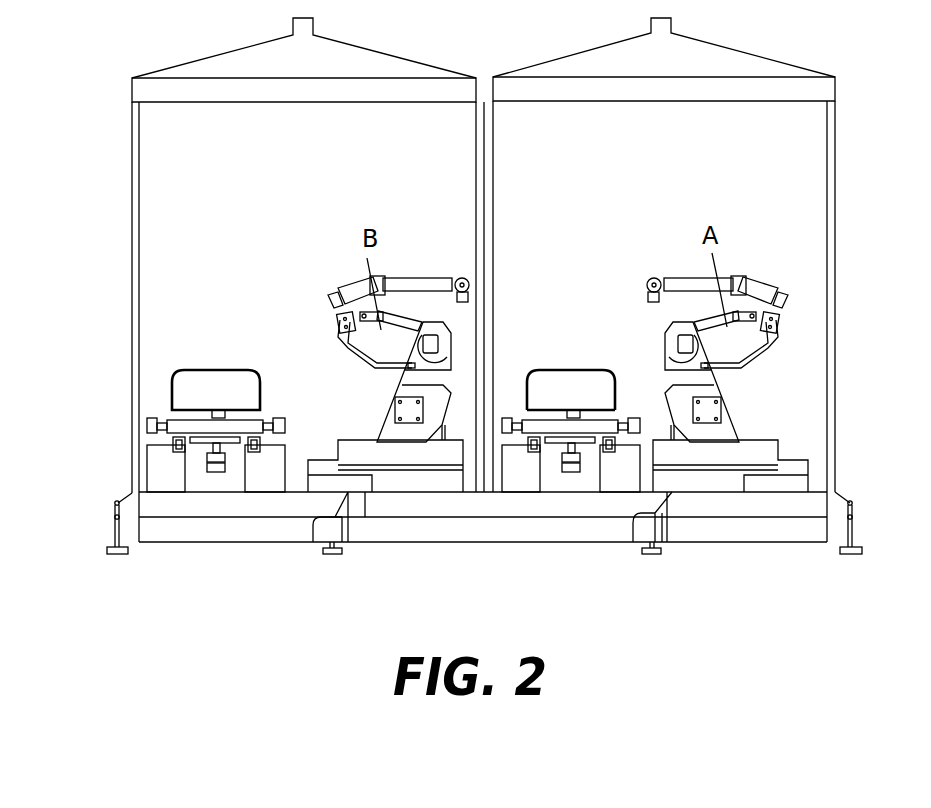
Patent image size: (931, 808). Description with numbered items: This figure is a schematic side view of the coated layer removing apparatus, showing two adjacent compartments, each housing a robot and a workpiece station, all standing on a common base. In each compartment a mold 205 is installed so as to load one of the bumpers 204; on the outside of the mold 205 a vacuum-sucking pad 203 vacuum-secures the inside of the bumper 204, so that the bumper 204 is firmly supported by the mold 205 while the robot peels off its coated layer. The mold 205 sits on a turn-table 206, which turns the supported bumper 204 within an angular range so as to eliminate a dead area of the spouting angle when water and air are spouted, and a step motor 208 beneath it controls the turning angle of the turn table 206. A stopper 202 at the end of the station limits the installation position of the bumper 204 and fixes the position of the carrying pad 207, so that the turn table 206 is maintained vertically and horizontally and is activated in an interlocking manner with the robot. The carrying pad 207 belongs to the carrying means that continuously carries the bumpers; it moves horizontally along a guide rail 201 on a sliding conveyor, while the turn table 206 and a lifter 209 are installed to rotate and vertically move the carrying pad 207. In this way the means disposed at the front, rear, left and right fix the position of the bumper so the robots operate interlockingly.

The guide rail 201 is at (623, 450).
The stopper 202 is at (625, 418).
The vacuum-sucking pad 203 is at (590, 370).
The bumper 204 is at (533, 372).
The mold 205 is at (572, 370).
The turn-table 206 is at (175, 410).
The carrying pad 207 is at (172, 427).
The step motor 208 is at (568, 476).
The lifter 209 is at (543, 447).